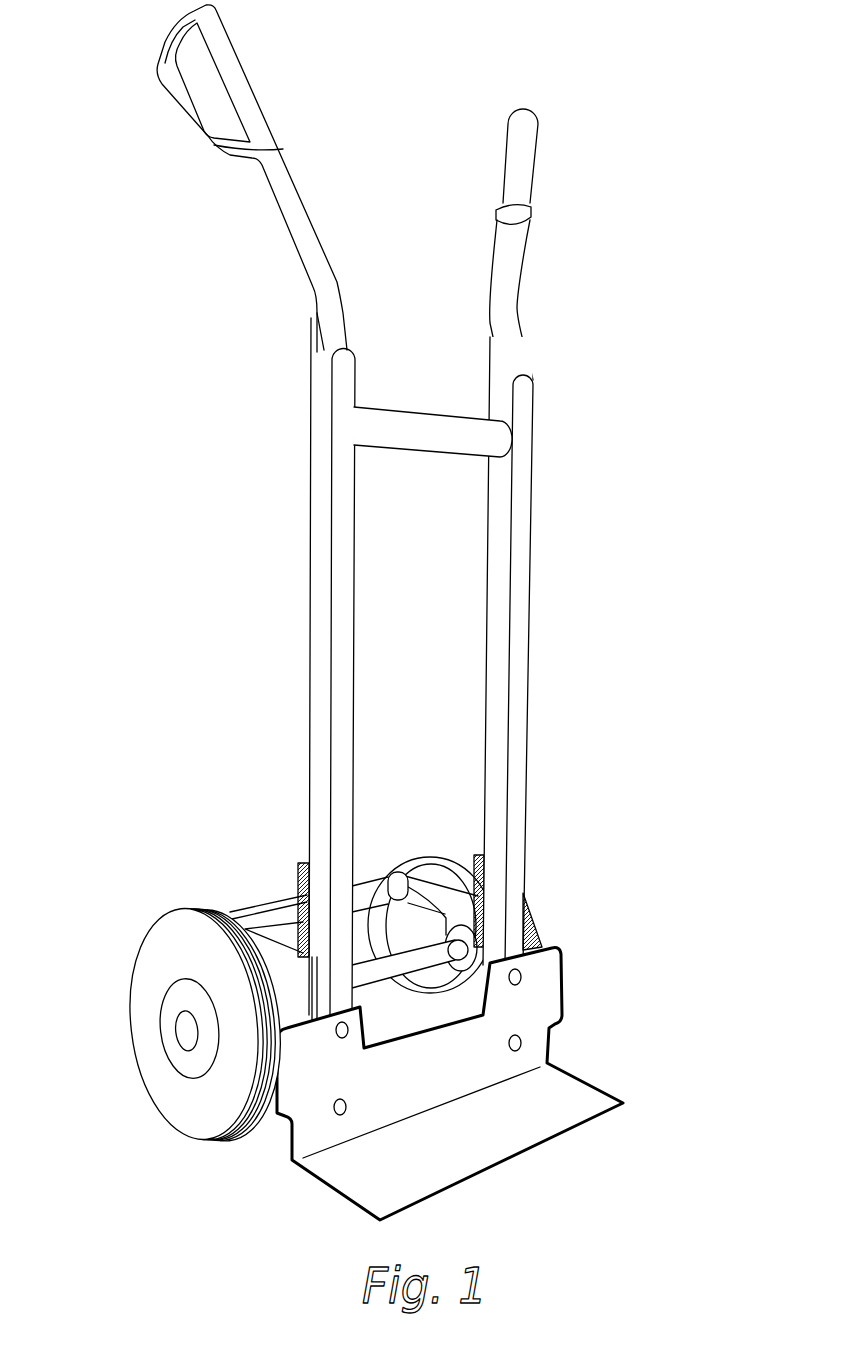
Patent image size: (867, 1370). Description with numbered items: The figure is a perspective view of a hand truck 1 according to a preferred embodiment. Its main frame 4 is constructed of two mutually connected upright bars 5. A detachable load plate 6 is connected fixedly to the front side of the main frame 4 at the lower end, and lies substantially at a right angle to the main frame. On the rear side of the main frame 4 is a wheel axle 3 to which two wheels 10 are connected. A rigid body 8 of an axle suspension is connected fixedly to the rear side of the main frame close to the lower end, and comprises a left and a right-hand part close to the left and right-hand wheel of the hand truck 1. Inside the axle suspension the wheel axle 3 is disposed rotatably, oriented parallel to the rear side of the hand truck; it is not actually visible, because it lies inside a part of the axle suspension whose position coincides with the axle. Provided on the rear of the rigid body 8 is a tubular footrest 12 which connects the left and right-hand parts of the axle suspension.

The hand truck 1 is at (393, 612).
The wheel axle 3 is at (363, 927).
The main frame 4 is at (428, 510).
The upright bars 5 is at (320, 577).
The load plate 6 is at (503, 1145).
The rigid body 8 is at (443, 900).
The wheels 10 is at (158, 1078).
The tubular footrest 12 is at (265, 903).